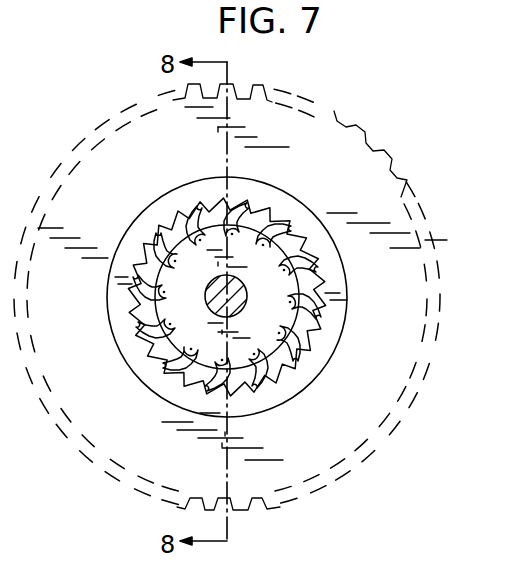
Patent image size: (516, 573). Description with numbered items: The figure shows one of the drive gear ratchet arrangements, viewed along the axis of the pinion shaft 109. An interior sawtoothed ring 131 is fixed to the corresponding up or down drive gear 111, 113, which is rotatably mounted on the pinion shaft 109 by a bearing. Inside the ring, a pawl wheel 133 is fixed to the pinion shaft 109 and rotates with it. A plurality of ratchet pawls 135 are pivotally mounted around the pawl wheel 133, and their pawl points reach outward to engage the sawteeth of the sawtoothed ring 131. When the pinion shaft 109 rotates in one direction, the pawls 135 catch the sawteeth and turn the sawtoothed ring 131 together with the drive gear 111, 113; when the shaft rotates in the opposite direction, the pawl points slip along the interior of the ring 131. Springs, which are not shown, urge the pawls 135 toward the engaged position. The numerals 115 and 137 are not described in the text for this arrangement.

The pinion shaft 109 is at (248, 302).
The up drive gear 111 is at (414, 410).
The down drive gear 113 is at (424, 406).
The ratchet wheel assembly 115 is at (200, 283).
The interior sawtoothed ring 131 is at (257, 192).
The pawl wheel 133 is at (167, 323).
The ratchet pawls 135 is at (182, 322).
The pawl pivots 137 is at (199, 309).